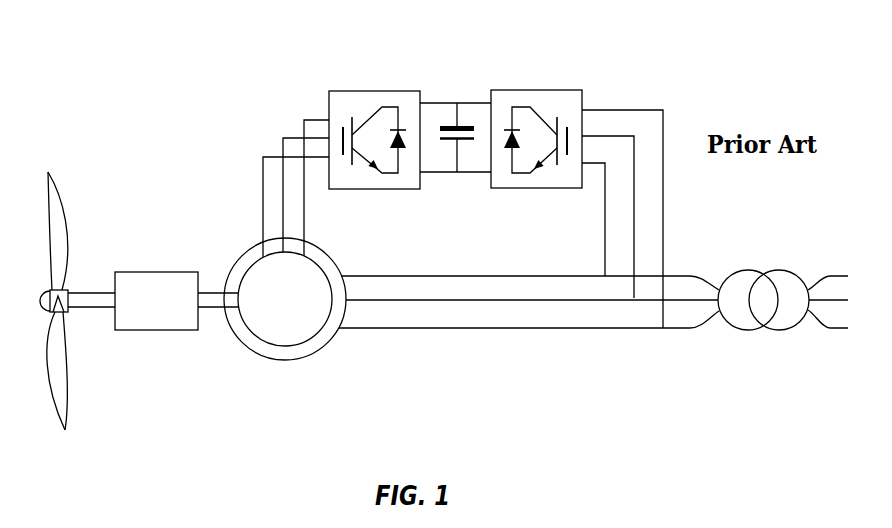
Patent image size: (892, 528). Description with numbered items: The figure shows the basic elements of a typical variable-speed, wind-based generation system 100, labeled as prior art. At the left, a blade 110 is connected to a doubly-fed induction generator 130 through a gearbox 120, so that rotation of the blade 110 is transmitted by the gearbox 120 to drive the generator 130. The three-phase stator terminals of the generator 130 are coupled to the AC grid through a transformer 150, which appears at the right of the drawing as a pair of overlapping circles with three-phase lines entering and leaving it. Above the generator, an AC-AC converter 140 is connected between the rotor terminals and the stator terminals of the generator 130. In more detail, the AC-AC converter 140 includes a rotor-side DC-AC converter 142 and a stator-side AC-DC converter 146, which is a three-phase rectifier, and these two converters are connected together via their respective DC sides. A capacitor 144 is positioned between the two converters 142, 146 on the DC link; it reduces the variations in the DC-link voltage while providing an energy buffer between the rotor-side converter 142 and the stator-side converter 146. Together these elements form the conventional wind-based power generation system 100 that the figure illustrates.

The variable-speed wind-based generation system 100 is at (192, 109).
The blade 110 is at (75, 390).
The gearbox 120 is at (133, 272).
The doubly-fed induction generator 130 is at (317, 352).
The AC-AC converter 140 is at (583, 75).
The rotor-side DC-AC converter 142 is at (350, 190).
The capacitor 144 is at (455, 192).
The stator-side AC-DC converter 146 is at (552, 189).
The transformer 150 is at (775, 270).